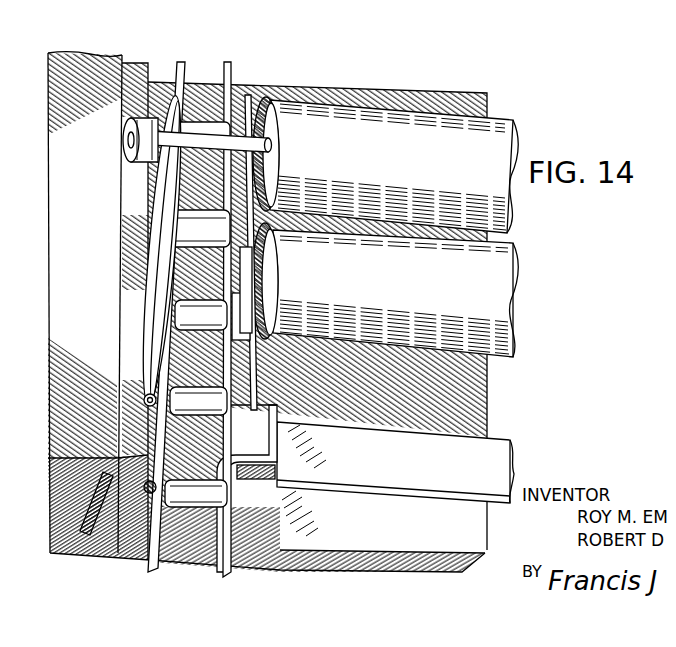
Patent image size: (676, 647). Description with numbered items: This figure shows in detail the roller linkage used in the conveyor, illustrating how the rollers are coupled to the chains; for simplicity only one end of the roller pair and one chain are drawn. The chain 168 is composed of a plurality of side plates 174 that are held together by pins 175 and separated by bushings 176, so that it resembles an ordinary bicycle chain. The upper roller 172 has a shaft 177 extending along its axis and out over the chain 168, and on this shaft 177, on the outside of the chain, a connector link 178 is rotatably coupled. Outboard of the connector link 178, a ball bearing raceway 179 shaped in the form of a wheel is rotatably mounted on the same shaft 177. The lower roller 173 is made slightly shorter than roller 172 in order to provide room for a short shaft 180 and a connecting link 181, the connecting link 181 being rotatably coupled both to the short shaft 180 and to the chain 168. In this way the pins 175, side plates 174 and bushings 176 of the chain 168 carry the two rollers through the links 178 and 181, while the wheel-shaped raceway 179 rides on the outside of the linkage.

The chain 168 is at (140, 561).
The roller 172 is at (512, 127).
The roller 173 is at (514, 285).
The side plates 174 is at (226, 61).
The pins 175 is at (148, 403).
The bushings 176 is at (188, 400).
The shaft 177 is at (244, 137).
The connector link 178 is at (160, 243).
The ball bearing raceway 179 is at (124, 160).
The short shaft 180 is at (263, 284).
The connecting link 181 is at (250, 318).